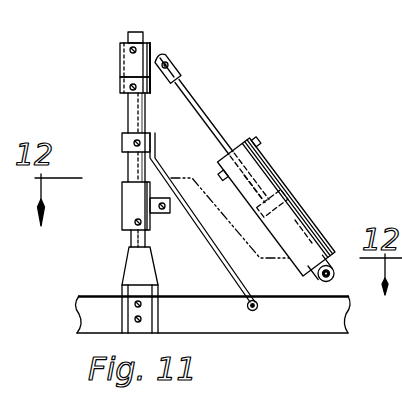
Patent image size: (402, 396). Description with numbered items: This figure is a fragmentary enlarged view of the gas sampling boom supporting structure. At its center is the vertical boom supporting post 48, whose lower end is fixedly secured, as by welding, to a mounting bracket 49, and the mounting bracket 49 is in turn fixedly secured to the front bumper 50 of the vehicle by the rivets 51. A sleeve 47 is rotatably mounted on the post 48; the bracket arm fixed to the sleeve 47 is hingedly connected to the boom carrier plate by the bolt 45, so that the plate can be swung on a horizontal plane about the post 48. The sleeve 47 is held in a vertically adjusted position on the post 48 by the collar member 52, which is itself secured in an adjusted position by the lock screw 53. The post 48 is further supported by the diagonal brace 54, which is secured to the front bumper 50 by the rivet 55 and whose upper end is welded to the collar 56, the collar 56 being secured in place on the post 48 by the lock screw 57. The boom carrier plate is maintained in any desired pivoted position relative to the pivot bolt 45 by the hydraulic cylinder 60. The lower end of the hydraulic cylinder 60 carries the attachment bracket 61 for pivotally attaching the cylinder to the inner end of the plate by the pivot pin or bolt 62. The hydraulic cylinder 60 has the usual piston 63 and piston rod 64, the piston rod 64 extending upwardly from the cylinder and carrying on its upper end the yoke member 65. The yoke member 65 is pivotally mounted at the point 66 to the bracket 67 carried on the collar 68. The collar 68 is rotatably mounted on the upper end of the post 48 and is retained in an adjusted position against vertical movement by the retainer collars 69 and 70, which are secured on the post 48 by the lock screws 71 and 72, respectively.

The bolt 45 is at (164, 210).
The sleeve 47 is at (122, 194).
The vertical boom supporting post 48 is at (128, 40).
The mounting bracket 49 is at (128, 268).
The front bumper 50 is at (204, 297).
The rivets 51 is at (141, 319).
The collar member 52 is at (134, 222).
The lock screw 53 is at (133, 232).
The diagonal brace 54 is at (238, 279).
The rivet 55 is at (255, 310).
The collar 56 is at (122, 150).
The lock screw 57 is at (134, 142).
The hydraulic cylinder 60 is at (272, 170).
The attachment bracket 61 is at (331, 266).
The pivot pin or bolt 62 is at (334, 278).
The piston 63 is at (293, 212).
The piston rod 64 is at (200, 107).
The yoke member 65 is at (181, 77).
The pivot point 66 is at (176, 60).
The bracket 67 is at (168, 63).
The collar 68 is at (120, 68).
The retainer collar 69 is at (152, 46).
The retainer collar 70 is at (121, 86).
The lock screw 71 is at (129, 50).
The lock screw 72 is at (131, 93).